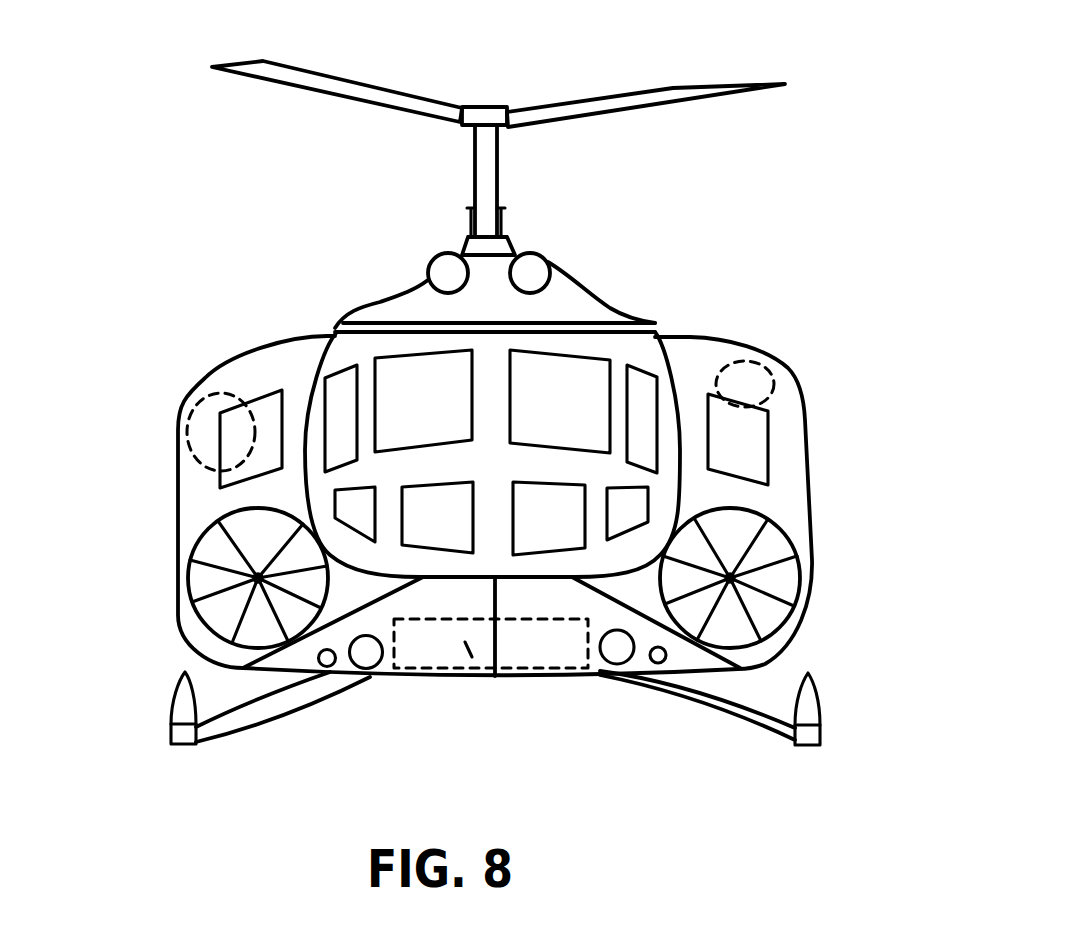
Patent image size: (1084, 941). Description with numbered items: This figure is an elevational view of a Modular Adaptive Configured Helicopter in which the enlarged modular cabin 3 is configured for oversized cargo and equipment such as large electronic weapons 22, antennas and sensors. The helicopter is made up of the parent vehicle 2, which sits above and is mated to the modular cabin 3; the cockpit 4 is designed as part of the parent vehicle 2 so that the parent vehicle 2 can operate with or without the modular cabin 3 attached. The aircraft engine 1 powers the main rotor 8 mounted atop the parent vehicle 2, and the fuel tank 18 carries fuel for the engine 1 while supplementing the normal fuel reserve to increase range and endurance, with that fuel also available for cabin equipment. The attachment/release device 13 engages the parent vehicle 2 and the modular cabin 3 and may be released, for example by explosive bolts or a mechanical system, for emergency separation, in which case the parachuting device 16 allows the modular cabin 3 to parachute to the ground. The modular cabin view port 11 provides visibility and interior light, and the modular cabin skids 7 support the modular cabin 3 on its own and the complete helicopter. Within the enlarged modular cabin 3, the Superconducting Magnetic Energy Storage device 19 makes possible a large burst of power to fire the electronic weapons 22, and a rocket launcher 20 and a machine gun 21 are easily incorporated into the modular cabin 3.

The aircraft engine 1 is at (445, 273).
The parent vehicle 2 is at (553, 308).
The modular cabin 3 is at (672, 338).
The cockpit 4 is at (408, 383).
The modular cabin skids 7 is at (171, 727).
The main rotor 8 is at (593, 108).
The modular cabin view port 11 is at (643, 400).
The attachment/release device 13 is at (317, 325).
The parachuting device 16 is at (170, 423).
The fuel tank 18 is at (475, 672).
The Superconducting Magnetic Energy Storage (SMES) device 19 is at (783, 349).
The rocket launcher 20 is at (612, 653).
The machine gun 21 is at (667, 655).
The electronic weapons 22 is at (770, 547).